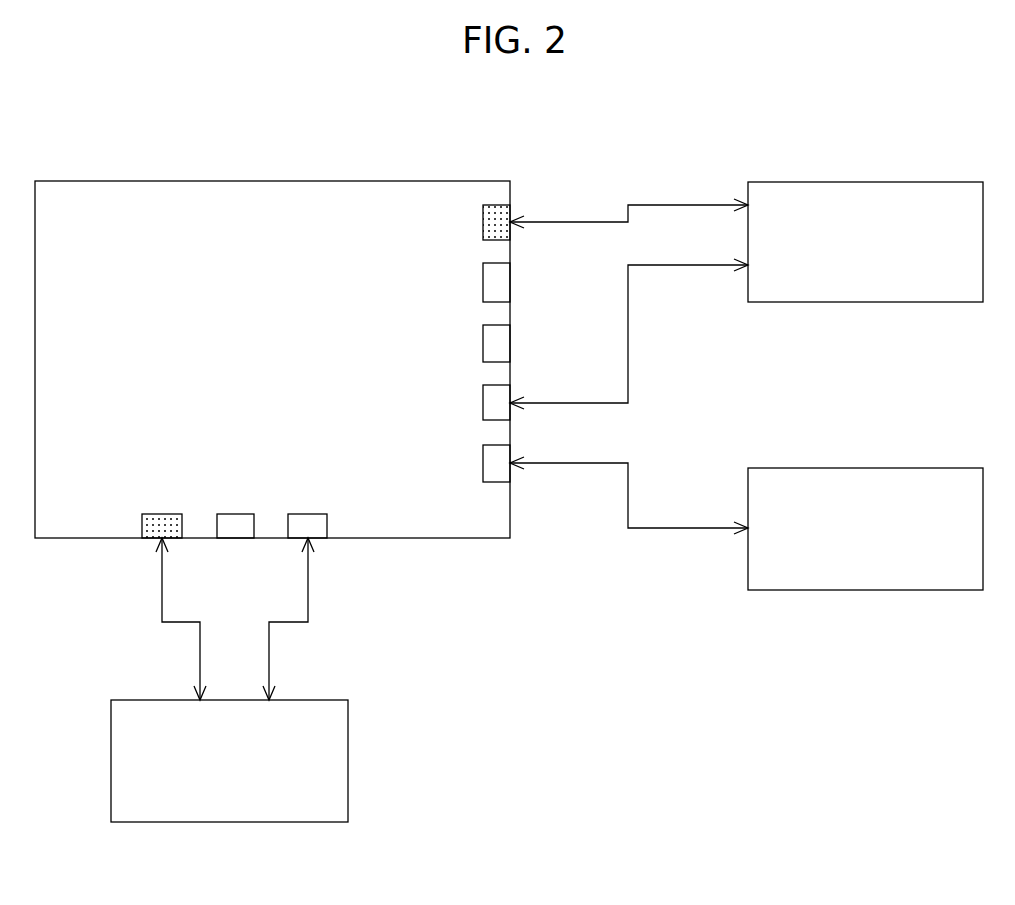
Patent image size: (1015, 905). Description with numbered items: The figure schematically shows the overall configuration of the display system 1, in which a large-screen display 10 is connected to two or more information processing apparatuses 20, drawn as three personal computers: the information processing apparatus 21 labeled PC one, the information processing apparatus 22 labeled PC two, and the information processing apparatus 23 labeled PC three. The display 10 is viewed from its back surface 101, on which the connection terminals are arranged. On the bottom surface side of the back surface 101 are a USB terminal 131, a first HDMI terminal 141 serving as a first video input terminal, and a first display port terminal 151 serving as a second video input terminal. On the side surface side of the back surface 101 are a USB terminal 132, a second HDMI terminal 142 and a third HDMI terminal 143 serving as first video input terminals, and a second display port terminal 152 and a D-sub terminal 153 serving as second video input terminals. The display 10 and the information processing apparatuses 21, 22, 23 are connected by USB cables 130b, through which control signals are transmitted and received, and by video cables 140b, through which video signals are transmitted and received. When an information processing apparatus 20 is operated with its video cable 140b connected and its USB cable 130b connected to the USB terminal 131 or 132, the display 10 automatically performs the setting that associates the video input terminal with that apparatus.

The display system 1 is at (626, 150).
The display 10 is at (354, 179).
The back surface 101 is at (186, 207).
The USB terminal 131 is at (152, 542).
The USB terminal 132 is at (512, 212).
The HDMI 1 terminal 141 is at (240, 533).
The HDMI 2 terminal 142 is at (497, 400).
The HDMI 3 terminal 143 is at (505, 470).
The display port 1 terminal 151 is at (318, 533).
The display port 2 terminal 152 is at (498, 347).
The D-sub terminal 153 is at (498, 287).
The USB cable 130b is at (683, 205).
The video cable 140b is at (680, 265).
The information processing apparatus 20 is at (547, 464).
The information processing apparatus 21 is at (836, 183).
The information processing apparatus 22 is at (352, 752).
The information processing apparatus 23 is at (836, 466).